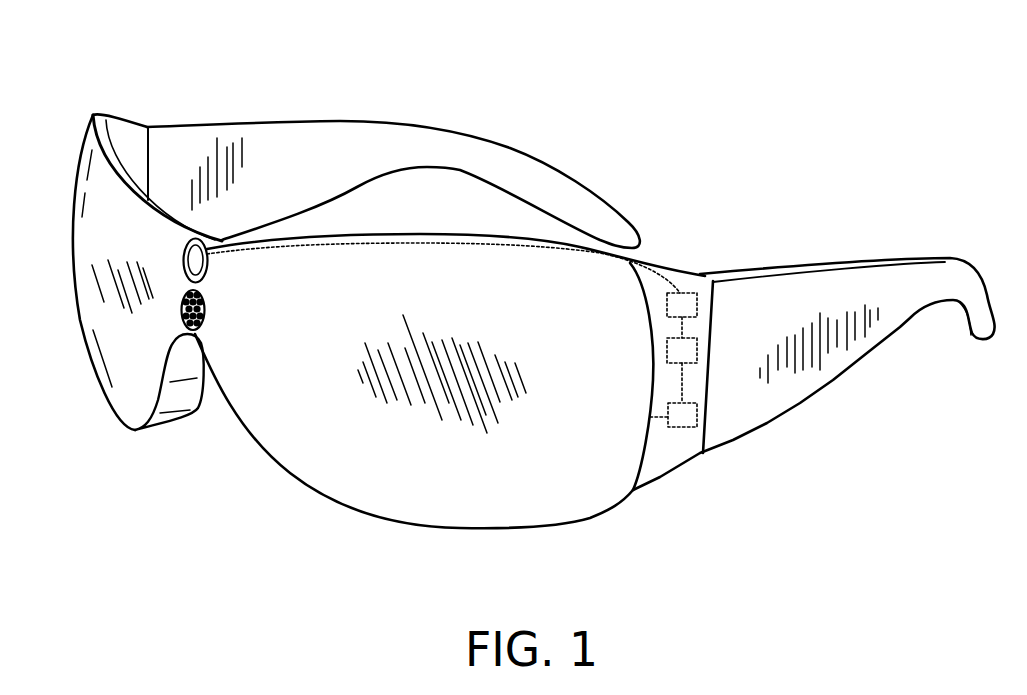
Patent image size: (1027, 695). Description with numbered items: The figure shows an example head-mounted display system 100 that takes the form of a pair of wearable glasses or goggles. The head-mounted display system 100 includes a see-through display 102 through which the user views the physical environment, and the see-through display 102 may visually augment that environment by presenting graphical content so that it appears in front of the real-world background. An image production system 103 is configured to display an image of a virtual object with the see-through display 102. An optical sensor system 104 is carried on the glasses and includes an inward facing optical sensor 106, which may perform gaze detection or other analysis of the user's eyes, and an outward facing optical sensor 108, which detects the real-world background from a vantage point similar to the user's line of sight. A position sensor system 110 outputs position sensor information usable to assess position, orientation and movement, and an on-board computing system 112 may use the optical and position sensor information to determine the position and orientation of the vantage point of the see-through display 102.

The head-mounted display system 100 is at (614, 100).
The see-through display 102 is at (390, 423).
The image production system 103 is at (682, 413).
The optical sensor system 104 is at (243, 205).
The inward facing optical sensor 106 is at (200, 253).
The outward facing optical sensor 108 is at (204, 335).
The position sensor system 110 is at (688, 347).
The on-board computing system 112 is at (685, 298).